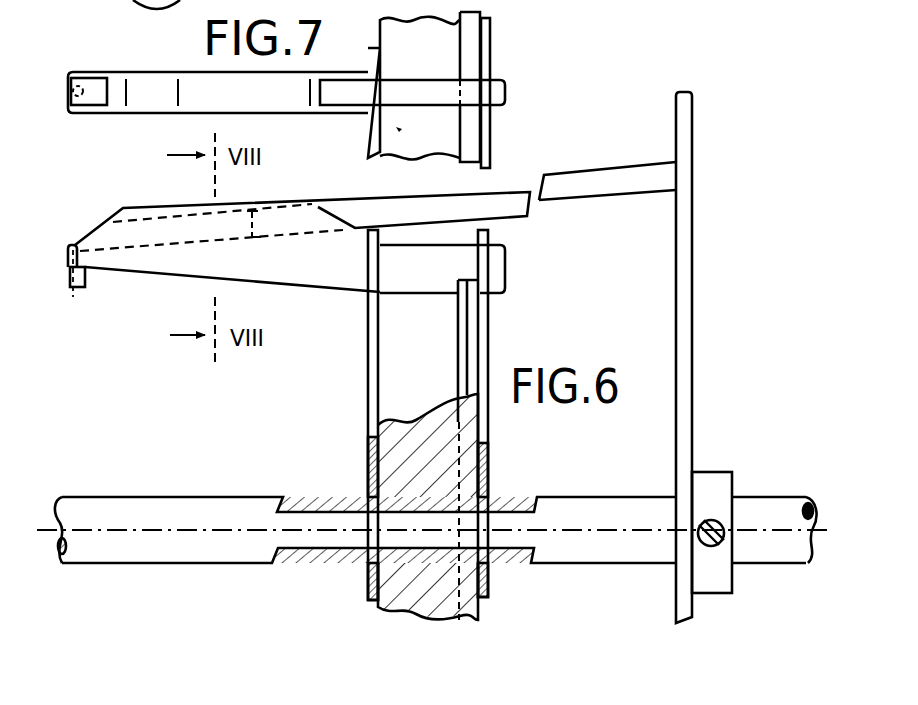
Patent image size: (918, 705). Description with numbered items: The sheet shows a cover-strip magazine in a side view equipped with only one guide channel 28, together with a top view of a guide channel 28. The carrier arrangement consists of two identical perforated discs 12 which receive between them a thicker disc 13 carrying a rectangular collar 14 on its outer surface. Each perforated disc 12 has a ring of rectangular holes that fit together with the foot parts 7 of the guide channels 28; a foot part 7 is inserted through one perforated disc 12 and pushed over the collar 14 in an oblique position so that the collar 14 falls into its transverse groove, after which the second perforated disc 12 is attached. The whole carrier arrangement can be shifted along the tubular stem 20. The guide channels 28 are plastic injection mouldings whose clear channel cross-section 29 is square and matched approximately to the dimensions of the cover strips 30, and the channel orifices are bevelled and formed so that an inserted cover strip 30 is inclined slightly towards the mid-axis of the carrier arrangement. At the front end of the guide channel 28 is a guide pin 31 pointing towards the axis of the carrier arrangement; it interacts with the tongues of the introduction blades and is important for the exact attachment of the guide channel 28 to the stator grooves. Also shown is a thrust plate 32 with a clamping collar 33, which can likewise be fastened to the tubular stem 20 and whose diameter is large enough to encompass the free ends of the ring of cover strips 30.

In FIG. 7, the foot part 7 is at (403, 93).
In FIG. 6, the foot part 7 is at (505, 275).
In FIG. 6, the perforated disc 12 is at (368, 463).
In FIG. 6, the thicker disc 13 is at (388, 342).
In FIG. 6, the rectangular collar 14 is at (468, 317).
In FIG. 6, the tubular stem 20 is at (157, 510).
In FIG. 7, the guide channel 28 is at (134, 121).
In FIG. 6, the guide channel 28 is at (138, 290).
In FIG. 6, the clear channel cross-section 29 is at (113, 238).
In FIG. 6, the cover strip 30 is at (607, 180).
In FIG. 6, the guide pin 31 is at (68, 277).
In FIG. 6, the thrust plate 32 is at (683, 282).
In FIG. 6, the clamping collar 33 is at (708, 483).